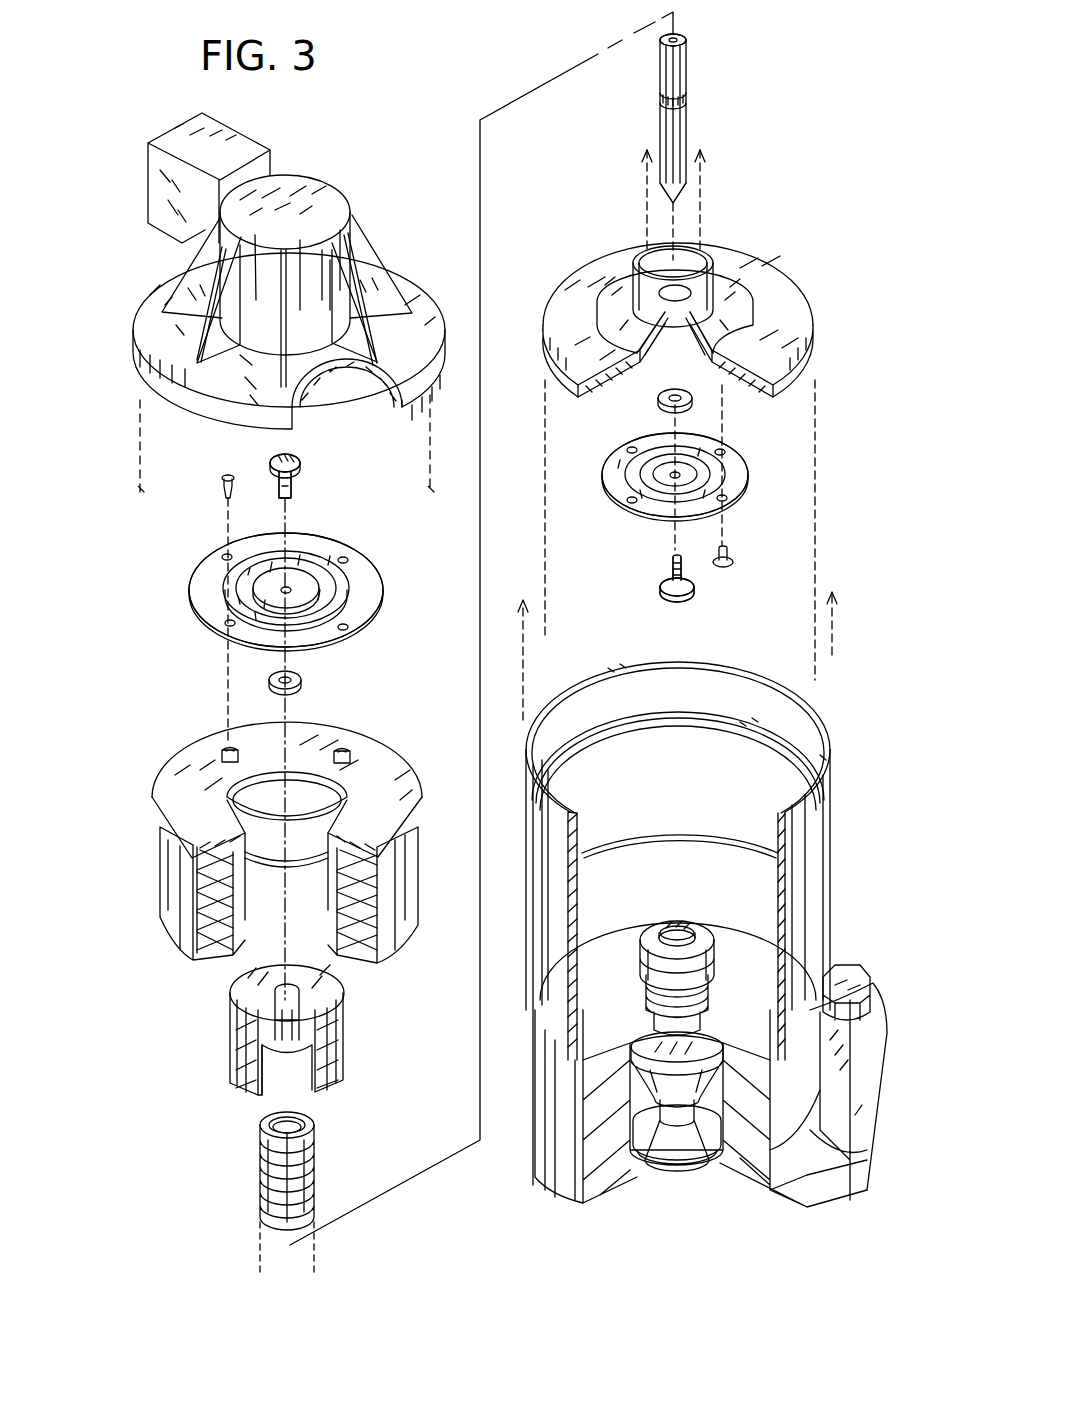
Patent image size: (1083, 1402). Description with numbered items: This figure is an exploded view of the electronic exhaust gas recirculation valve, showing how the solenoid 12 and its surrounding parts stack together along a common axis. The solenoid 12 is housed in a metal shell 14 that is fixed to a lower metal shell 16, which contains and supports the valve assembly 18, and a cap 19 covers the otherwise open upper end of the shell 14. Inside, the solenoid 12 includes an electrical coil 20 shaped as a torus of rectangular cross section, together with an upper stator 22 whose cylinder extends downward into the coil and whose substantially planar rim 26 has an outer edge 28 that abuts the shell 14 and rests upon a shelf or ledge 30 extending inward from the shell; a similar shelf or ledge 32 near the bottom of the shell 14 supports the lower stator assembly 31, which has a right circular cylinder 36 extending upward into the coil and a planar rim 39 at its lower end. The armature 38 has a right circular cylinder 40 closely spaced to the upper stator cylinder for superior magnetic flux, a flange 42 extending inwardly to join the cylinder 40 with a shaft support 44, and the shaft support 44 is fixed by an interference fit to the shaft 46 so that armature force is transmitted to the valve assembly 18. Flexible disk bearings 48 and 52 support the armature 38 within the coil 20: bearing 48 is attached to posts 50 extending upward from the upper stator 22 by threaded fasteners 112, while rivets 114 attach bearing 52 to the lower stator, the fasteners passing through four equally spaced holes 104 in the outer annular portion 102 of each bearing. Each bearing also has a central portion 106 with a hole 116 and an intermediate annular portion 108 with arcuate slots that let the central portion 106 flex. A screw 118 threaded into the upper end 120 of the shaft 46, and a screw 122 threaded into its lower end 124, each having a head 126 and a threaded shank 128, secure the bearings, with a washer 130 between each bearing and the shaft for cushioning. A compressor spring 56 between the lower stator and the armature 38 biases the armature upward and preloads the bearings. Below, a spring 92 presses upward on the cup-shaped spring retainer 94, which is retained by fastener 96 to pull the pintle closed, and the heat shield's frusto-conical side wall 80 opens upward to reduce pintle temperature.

The solenoid 12 is at (153, 991).
The metal shell 14 is at (680, 772).
The lower metal shell 16 is at (583, 1183).
The valve assembly 18 is at (748, 1001).
The cap 19 is at (323, 180).
The electrical coil 20 is at (160, 880).
The upper stator 22 is at (274, 808).
The rim 26 is at (380, 762).
The outer edge 28 is at (415, 860).
The shelf or ledge 30 is at (750, 718).
The disk assembly 31 is at (806, 238).
The shelf or ledge 32 is at (690, 920).
The right circular cylinder 36 is at (715, 280).
The armature 38 is at (228, 1030).
The rim 39 is at (790, 300).
The right circular cylinder 40 is at (366, 1024).
The flange 42 is at (330, 1052).
The shaft support 44 is at (262, 1070).
The shaft 46 is at (690, 115).
The bearing 48 is at (160, 610).
The posts 50 is at (220, 752).
The bearing 52 is at (776, 503).
The compressor spring 56 is at (258, 1178).
The frusto-conical side wall 80 is at (715, 1080).
The spring 92 is at (717, 977).
The spring retainer 94 is at (737, 950).
The fastener 96 is at (680, 935).
The outer annular portion 102 is at (194, 566).
The holes 104 is at (222, 628).
The central portion 106 is at (296, 565).
The intermediate annular portion 108 is at (347, 577).
The threaded fasteners 112 is at (221, 476).
The rivets 114 is at (725, 572).
The hole 116 is at (290, 595).
The screw 118 is at (326, 447).
The upper end 120 is at (688, 30).
The screw 122 is at (640, 591).
The lower end 124 is at (673, 203).
The head 126 is at (300, 455).
The threaded shank 128 is at (295, 492).
The washer 130 is at (300, 688).